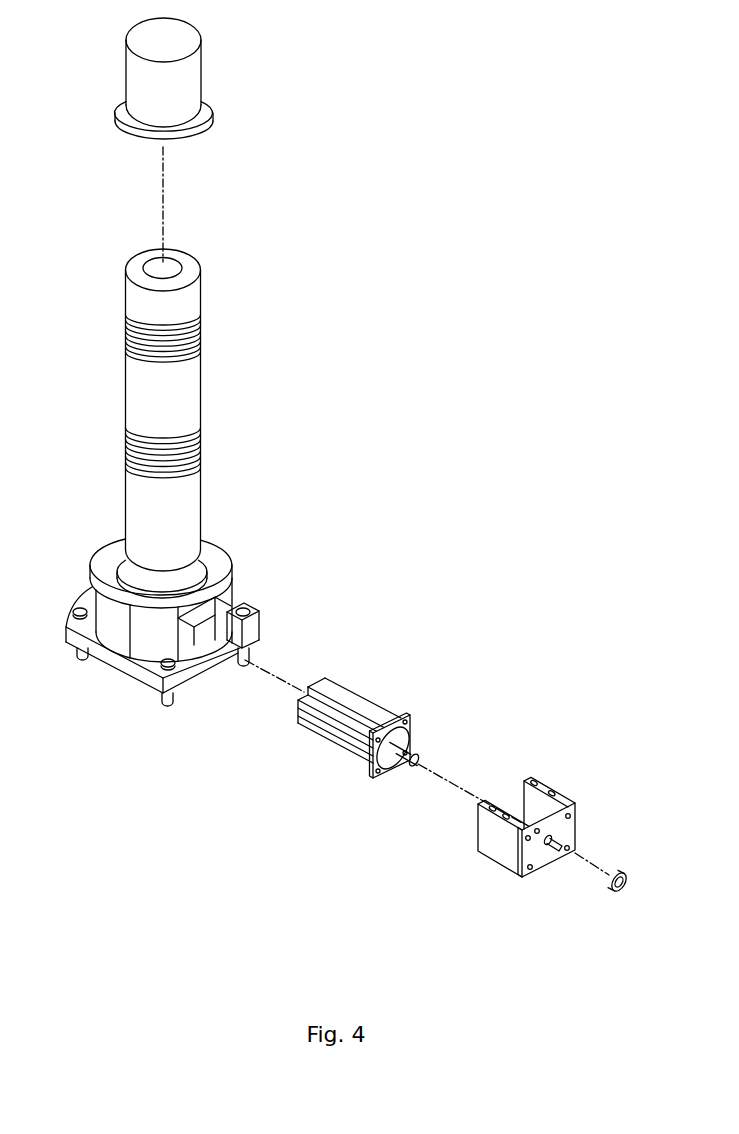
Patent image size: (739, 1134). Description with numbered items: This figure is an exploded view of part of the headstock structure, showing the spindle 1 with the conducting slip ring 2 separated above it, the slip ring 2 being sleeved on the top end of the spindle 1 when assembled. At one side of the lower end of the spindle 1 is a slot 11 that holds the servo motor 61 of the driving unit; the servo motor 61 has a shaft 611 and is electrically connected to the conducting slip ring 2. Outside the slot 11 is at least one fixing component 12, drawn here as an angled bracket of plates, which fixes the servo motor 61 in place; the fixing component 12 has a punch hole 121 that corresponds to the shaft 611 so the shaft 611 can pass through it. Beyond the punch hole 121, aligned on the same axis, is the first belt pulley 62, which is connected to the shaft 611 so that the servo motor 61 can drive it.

The spindle 1 is at (188, 410).
The conducting slip ring 2 is at (190, 88).
The slot 11 is at (213, 614).
The servo motor 61 is at (360, 700).
The shaft 611 is at (412, 748).
The fixing component 12 is at (557, 793).
The punch hole 121 is at (560, 841).
The first belt pulley 62 is at (618, 876).